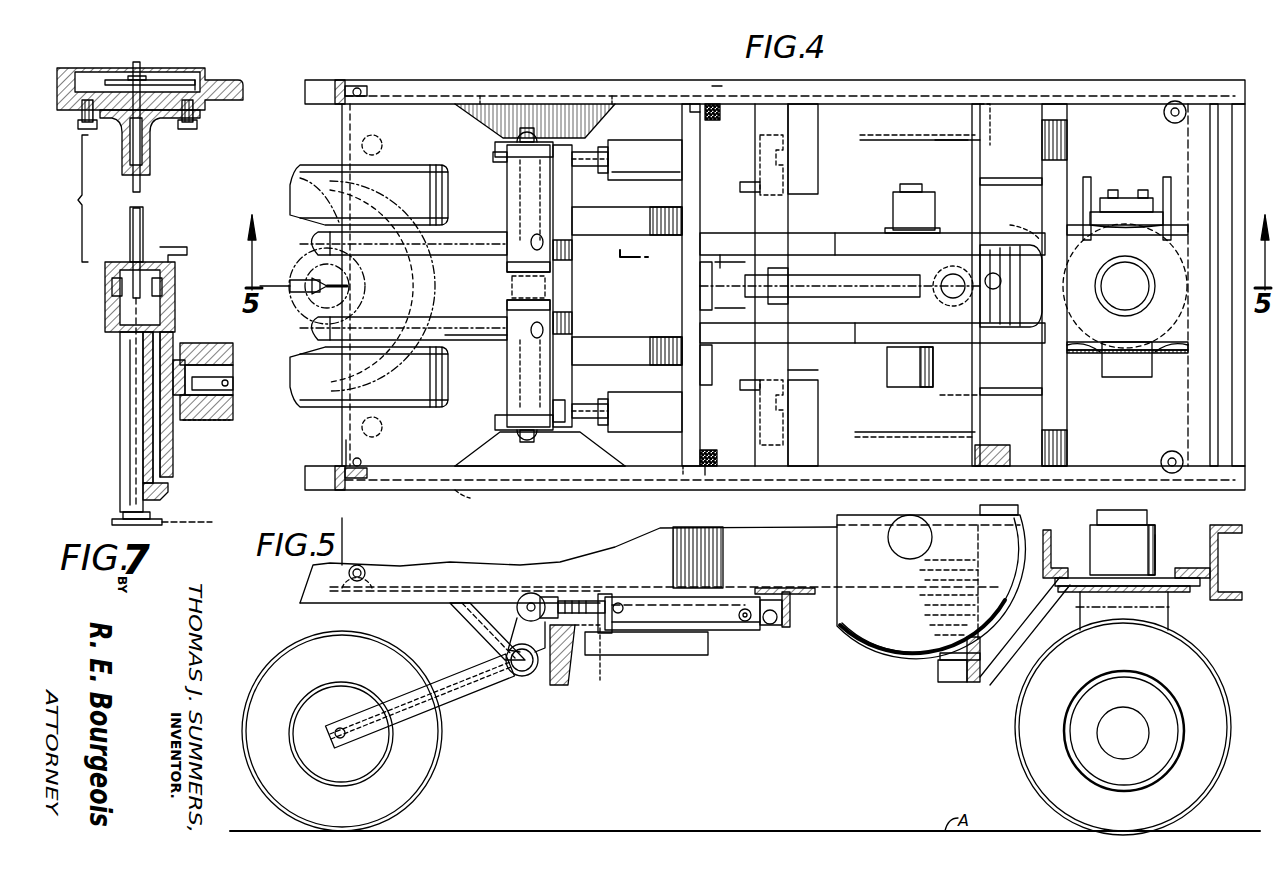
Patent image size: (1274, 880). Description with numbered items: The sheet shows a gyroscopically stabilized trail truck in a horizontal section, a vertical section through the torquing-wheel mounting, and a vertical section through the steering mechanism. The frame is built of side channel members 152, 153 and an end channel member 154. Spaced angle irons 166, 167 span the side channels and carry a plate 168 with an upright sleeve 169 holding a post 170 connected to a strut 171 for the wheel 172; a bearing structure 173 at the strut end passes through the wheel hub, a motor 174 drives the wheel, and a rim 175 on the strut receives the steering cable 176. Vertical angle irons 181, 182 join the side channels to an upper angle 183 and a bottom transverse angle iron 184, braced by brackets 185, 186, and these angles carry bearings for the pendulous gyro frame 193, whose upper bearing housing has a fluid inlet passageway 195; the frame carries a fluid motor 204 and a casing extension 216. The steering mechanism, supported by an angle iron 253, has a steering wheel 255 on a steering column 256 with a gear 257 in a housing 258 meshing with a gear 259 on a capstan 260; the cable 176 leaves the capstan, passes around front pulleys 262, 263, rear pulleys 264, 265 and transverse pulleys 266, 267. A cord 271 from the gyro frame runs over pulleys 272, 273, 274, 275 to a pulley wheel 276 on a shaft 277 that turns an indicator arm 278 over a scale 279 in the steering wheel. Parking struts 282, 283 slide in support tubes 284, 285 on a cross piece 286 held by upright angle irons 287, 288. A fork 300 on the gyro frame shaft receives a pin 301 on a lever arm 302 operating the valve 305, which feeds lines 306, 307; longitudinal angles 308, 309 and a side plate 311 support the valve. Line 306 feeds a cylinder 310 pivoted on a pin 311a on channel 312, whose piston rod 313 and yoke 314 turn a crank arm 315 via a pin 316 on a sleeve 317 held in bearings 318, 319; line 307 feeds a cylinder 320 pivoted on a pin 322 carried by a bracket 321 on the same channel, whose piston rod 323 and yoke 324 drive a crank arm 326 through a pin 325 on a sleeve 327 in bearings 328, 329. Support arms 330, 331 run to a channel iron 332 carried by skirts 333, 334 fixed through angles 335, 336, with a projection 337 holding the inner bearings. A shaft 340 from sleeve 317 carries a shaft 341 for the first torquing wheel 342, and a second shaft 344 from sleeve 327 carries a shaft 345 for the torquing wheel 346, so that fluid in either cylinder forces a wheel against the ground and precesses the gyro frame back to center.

In FIG. 4, the side channel member 152 is at (1195, 490).
In FIG. 4, the side channel member 153 is at (905, 100).
In FIG. 4, the end channel member 154 is at (1238, 180).
In FIG. 5, the end channel member 154 is at (1215, 592).
In FIG. 4, the angle iron 166 is at (1200, 440).
In FIG. 5, the angle iron 166 is at (1218, 560).
In FIG. 4, the angle iron 167 is at (1055, 435).
In FIG. 5, the angle iron 167 is at (1052, 558).
In FIG. 4, the plate 168 is at (1085, 352).
In FIG. 5, the plate 168 is at (1180, 570).
In FIG. 4, the upright sleeve 169 is at (1150, 352).
In FIG. 5, the upright sleeve 169 is at (1157, 545).
In FIG. 4, the post 170 is at (1125, 286).
In FIG. 5, the post 170 is at (1110, 518).
In FIG. 4, the strut 171 is at (1165, 180).
In FIG. 5, the strut 171 is at (1170, 620).
In FIG. 4, the wheel 172 is at (1035, 225).
In FIG. 5, the wheel 172 is at (1225, 705).
In FIG. 4, the bearing structure 173 is at (1130, 378).
In FIG. 5, the bearing structure 173 is at (1140, 745).
In FIG. 4, the motor 174 is at (1125, 200).
In FIG. 4, the rim 175 is at (1195, 237).
In FIG. 5, the rim 175 is at (1050, 600).
In FIG. 7, the cable 176 is at (205, 422).
In FIG. 4, the cable 176 is at (785, 98).
In FIG. 5, the cable 176 is at (1145, 592).
In FIG. 4, the vertical angle iron 181 is at (1000, 458).
In FIG. 4, the vertical angle iron 182 is at (1007, 104).
In FIG. 4, the angle 183 is at (820, 410).
In FIG. 5, the angle iron 184 is at (955, 685).
In FIG. 4, the bracket 185 is at (1015, 395).
In FIG. 4, the bracket 186 is at (1010, 178).
In FIG. 5, the bracket 186 is at (1010, 660).
In FIG. 5, the gyro frame 193 is at (848, 648).
In FIG. 4, the fluid inlet passageway 195 is at (985, 280).
In FIG. 4, the fluid motor 204 is at (890, 198).
In FIG. 4, the casing extension 216 is at (885, 375).
In FIG. 5, the casing extension 216 is at (895, 545).
In FIG. 7, the angle iron 253 is at (178, 247).
In FIG. 7, the steering wheel 255 is at (243, 82).
In FIG. 7, the steering column 256 is at (152, 143).
In FIG. 7, the gear 257 is at (112, 296).
In FIG. 7, the housing 258 is at (105, 318).
In FIG. 7, the gear 259 is at (168, 320).
In FIG. 7, the capstan 260 is at (233, 358).
In FIG. 4, the pulley 262 is at (1160, 456).
In FIG. 4, the pulley 263 is at (1180, 102).
In FIG. 4, the rear pulley 264 is at (357, 470).
In FIG. 4, the rear pulley 265 is at (352, 86).
In FIG. 5, the rear pulley 265 is at (360, 565).
In FIG. 4, the transverse pulley 266 is at (338, 455).
In FIG. 4, the transverse pulley 267 is at (335, 108).
In FIG. 7, the cord 271 is at (186, 520).
In FIG. 4, the cord 271 is at (880, 138).
In FIG. 4, the pulley 272 is at (945, 433).
In FIG. 4, the pulley 273 is at (935, 140).
In FIG. 4, the pulley 274 is at (383, 430).
In FIG. 4, the pulley 275 is at (383, 135).
In FIG. 7, the pulley wheel 276 is at (150, 525).
In FIG. 4, the pulley wheel 276 is at (295, 318).
In FIG. 7, the shaft 277 is at (140, 192).
In FIG. 7, the indicator arm 278 is at (178, 82).
In FIG. 7, the scale 279 is at (194, 82).
In FIG. 4, the parking strut 282 is at (718, 458).
In FIG. 4, the parking strut 283 is at (716, 118).
In FIG. 4, the support tube 284 is at (710, 470).
In FIG. 4, the support tube 285 is at (718, 88).
In FIG. 4, the cross piece 286 is at (670, 295).
In FIG. 4, the upright angle iron 287 is at (690, 470).
In FIG. 4, the upright angle iron 288 is at (698, 104).
In FIG. 4, the fork 300 is at (950, 266).
In FIG. 4, the pin 301 is at (955, 300).
In FIG. 4, the lever arm 302 is at (860, 258).
In FIG. 4, the valve 305 is at (778, 262).
In FIG. 4, the line 306 is at (665, 285).
In FIG. 4, the line 307 is at (730, 185).
In FIG. 5, the line 307 is at (745, 608).
In FIG. 4, the longitudinal angle 308 is at (855, 345).
In FIG. 4, the longitudinal angle 309 is at (835, 235).
In FIG. 4, the cylinder 310 is at (645, 388).
In FIG. 4, the side plate 311 is at (725, 250).
In FIG. 4, the pin 311a is at (790, 400).
In FIG. 4, the channel 312 is at (785, 378).
In FIG. 4, the piston rod 313 is at (598, 405).
In FIG. 4, the yoke 314 is at (548, 400).
In FIG. 4, the crank arm 315 is at (500, 410).
In FIG. 4, the pin 316 is at (525, 395).
In FIG. 4, the sleeve 317 is at (548, 345).
In FIG. 4, the bearing 318 is at (553, 300).
In FIG. 4, the bearing 319 is at (490, 445).
In FIG. 4, the cylinder 320 is at (652, 140).
In FIG. 5, the cylinder 320 is at (757, 640).
In FIG. 4, the block 321 is at (790, 162).
In FIG. 4, the pin 322 is at (787, 140).
In FIG. 4, the piston rod 323 is at (612, 148).
In FIG. 5, the piston rod 323 is at (605, 602).
In FIG. 4, the yoke 324 is at (585, 172).
In FIG. 5, the yoke 324 is at (555, 600).
In FIG. 4, the pin 325 is at (528, 136).
In FIG. 5, the pin 325 is at (531, 600).
In FIG. 4, the crank arm 326 is at (497, 165).
In FIG. 5, the crank arm 326 is at (520, 598).
In FIG. 4, the sleeve 327 is at (507, 215).
In FIG. 5, the sleeve 327 is at (515, 680).
In FIG. 4, the bearing 328 is at (495, 150).
In FIG. 4, the bearing 329 is at (528, 270).
In FIG. 4, the support arm 330 is at (600, 230).
In FIG. 5, the support arm 330 is at (672, 655).
In FIG. 4, the support arm 331 is at (635, 340).
In FIG. 4, the channel iron 332 is at (620, 253).
In FIG. 5, the channel iron 332 is at (555, 685).
In FIG. 4, the skirt 333 is at (560, 472).
In FIG. 4, the skirt 334 is at (500, 120).
In FIG. 5, the skirt 334 is at (490, 612).
In FIG. 4, the angle 335 is at (477, 503).
In FIG. 4, the angle 336 is at (480, 96).
In FIG. 4, the projection 337 is at (507, 292).
In FIG. 4, the shaft 340 is at (480, 338).
In FIG. 4, the shaft 341 is at (360, 320).
In FIG. 4, the first torquing wheel 342 is at (445, 390).
In FIG. 4, the second shaft 344 is at (395, 250).
In FIG. 5, the second shaft 344 is at (455, 700).
In FIG. 4, the shaft 345 is at (300, 245).
In FIG. 4, the torquing wheel 346 is at (450, 175).
In FIG. 5, the torquing wheel 346 is at (430, 788).